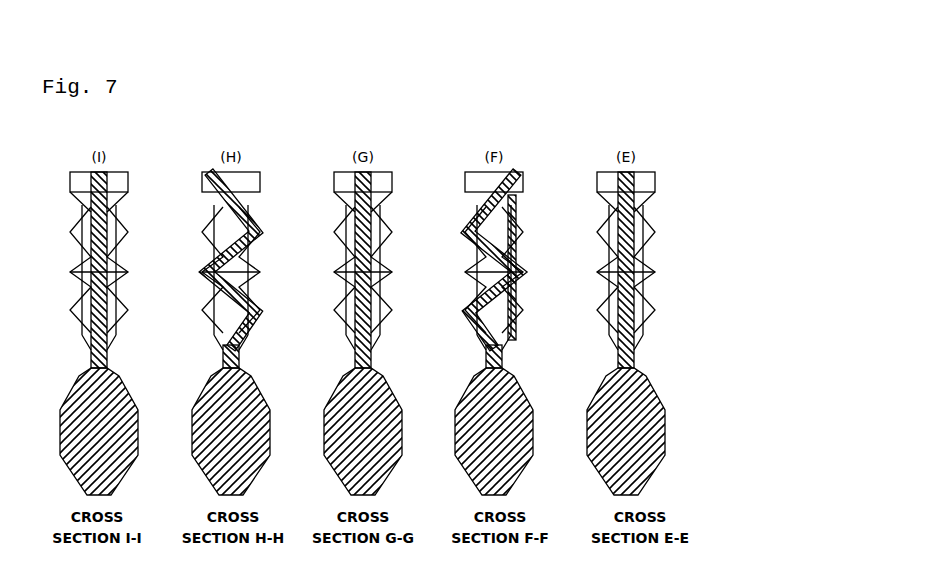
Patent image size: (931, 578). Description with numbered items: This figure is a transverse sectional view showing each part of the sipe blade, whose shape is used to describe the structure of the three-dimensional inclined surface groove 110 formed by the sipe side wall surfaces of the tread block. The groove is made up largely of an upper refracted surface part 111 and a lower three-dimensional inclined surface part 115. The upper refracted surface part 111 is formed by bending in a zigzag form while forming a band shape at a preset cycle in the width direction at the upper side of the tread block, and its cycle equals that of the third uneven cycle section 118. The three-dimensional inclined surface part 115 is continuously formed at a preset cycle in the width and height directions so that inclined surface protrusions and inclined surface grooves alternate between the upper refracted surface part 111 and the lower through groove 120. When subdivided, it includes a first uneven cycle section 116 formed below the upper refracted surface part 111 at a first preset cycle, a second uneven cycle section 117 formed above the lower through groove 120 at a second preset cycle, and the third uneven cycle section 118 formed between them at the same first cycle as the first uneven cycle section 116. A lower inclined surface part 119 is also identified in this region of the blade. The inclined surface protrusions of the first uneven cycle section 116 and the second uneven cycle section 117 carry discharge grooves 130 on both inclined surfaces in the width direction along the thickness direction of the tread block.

The three-dimensional inclined surface groove 110 is at (720, 270).
The upper refracted surface part 111 is at (656, 183).
The three-dimensional inclined surface part 115 is at (696, 270).
The first uneven cycle section 116 is at (656, 232).
The second uneven cycle section 117 is at (656, 310).
The third uneven cycle section 118 is at (656, 272).
The lower inclined surface part 119 is at (677, 340).
The lower through groove 120 is at (660, 437).
The discharge groove 130 is at (598, 232).